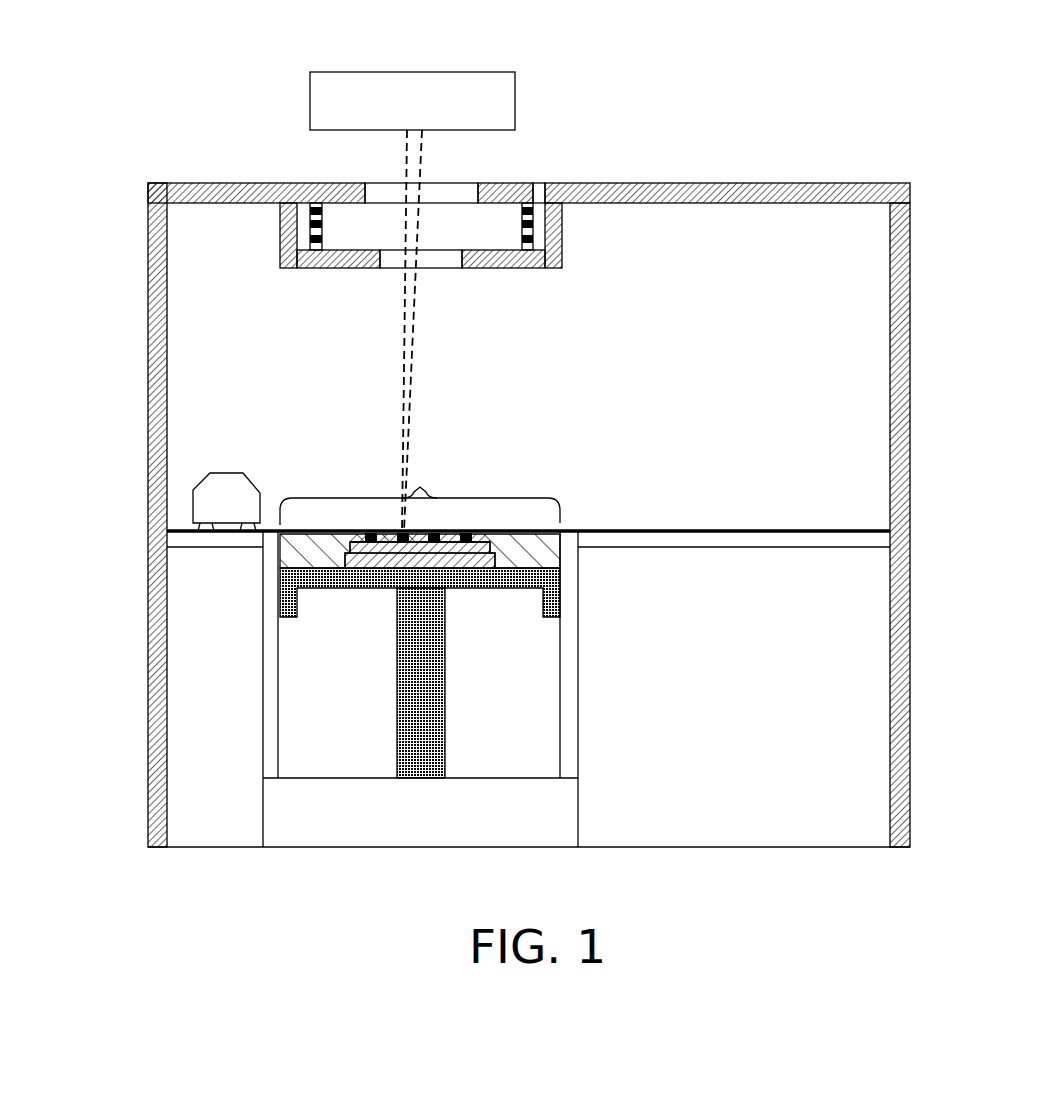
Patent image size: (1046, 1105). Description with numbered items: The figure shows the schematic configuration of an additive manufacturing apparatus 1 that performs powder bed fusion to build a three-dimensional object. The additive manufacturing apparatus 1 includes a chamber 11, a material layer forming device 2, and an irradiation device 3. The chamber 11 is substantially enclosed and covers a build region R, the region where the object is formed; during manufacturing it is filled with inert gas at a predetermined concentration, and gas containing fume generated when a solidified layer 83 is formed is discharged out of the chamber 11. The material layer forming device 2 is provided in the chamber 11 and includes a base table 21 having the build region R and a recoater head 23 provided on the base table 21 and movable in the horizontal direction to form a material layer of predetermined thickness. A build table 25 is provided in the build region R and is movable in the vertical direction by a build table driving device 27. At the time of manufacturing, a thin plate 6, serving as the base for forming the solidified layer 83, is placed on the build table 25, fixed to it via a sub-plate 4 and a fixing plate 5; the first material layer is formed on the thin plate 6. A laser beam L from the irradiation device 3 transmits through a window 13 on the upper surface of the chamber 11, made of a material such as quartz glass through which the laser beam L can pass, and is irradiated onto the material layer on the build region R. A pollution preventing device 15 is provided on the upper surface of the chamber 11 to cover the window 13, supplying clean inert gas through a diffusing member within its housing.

The additive manufacturing apparatus 1 is at (114, 114).
The material layer forming device 2 is at (239, 451).
The irradiation device 3 is at (507, 91).
The sub-plate 4 is at (468, 560).
The fixing plate 5 is at (350, 548).
The thin plate 6 is at (480, 540).
The chamber 11 is at (900, 250).
The window 13 is at (378, 190).
The pollution preventing device 15 is at (497, 270).
The base table 21 is at (682, 540).
The recoater head 23 is at (245, 487).
The build table 25 is at (347, 588).
The build table driving device 27 is at (432, 643).
The solidified layer 83 is at (370, 533).
The laser beam L is at (414, 335).
The build region R is at (420, 492).